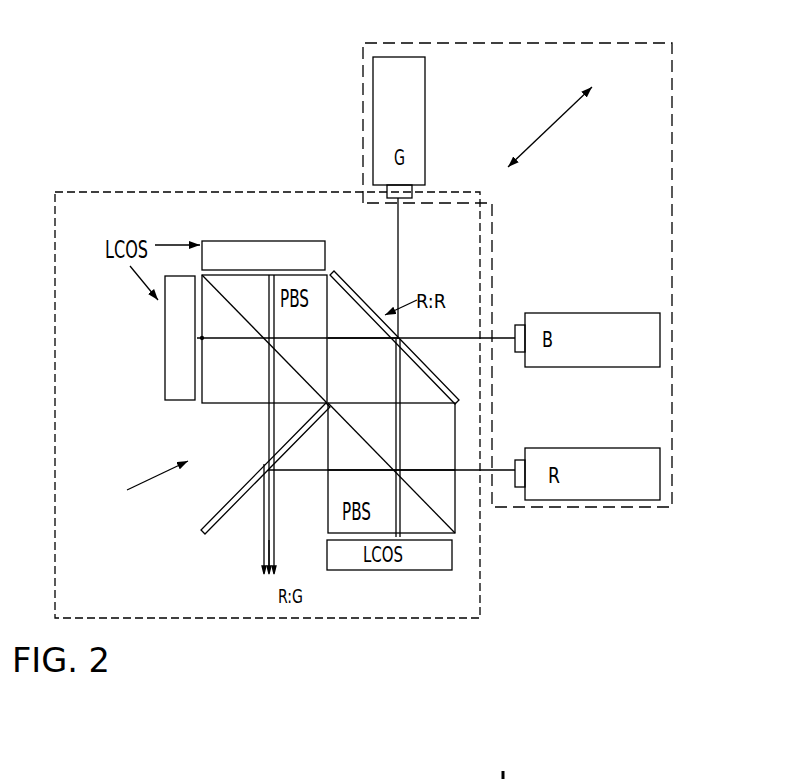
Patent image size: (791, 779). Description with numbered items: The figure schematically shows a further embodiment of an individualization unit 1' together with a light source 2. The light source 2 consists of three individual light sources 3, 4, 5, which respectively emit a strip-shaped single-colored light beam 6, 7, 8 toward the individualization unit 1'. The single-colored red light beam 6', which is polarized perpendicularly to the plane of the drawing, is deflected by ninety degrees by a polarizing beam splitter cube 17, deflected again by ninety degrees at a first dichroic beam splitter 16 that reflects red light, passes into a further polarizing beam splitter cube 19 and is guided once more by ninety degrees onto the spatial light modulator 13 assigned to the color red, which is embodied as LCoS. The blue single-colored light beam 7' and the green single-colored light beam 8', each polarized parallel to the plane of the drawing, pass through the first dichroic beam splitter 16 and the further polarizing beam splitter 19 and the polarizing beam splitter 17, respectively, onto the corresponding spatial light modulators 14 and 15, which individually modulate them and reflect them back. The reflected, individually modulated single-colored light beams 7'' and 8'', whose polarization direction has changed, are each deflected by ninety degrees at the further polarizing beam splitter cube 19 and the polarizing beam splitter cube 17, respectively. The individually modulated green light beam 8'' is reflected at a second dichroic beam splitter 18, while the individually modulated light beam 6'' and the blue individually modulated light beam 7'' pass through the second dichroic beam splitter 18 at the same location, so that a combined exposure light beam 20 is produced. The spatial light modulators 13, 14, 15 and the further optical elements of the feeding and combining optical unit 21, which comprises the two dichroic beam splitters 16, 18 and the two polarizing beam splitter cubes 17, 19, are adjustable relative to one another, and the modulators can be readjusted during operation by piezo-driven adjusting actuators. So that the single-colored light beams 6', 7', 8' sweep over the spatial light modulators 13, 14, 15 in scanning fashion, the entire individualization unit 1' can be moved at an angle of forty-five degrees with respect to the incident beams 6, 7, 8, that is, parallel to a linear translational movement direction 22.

The individualization unit 1' is at (267, 377).
The light source 2 is at (562, 43).
The individual light source 3 is at (628, 498).
The individual light source 4 is at (628, 367).
The individual light source 5 is at (425, 123).
The single-colored light beam 6 is at (394, 515).
The single-colored red light beam 6' is at (318, 360).
The individually modulated single-colored light beam 6'' is at (278, 424).
The single-colored light beam 7 is at (469, 369).
The blue single-colored light beam 7' is at (297, 305).
The individually modulated single-colored light beam 7'' is at (241, 459).
The single-colored light beam 8 is at (429, 248).
The green single-colored light beam 8' is at (452, 466).
The individually modulated single-colored green light beam 8'' is at (372, 489).
The spatial light modulator 13 is at (203, 240).
The spatial light modulator 14 is at (163, 365).
The spatial light modulator 15 is at (427, 568).
The first dichroic beam splitter 16 is at (342, 278).
The polarizing beam splitter cube 17 is at (457, 443).
The second dichroic beam splitter 18 is at (203, 523).
The further polarizing beam splitter cube 19 is at (212, 402).
The combined exposure light beam 20 is at (275, 530).
The feeding and combining optical unit 21 is at (140, 484).
The linear translational movement direction 22 is at (548, 130).